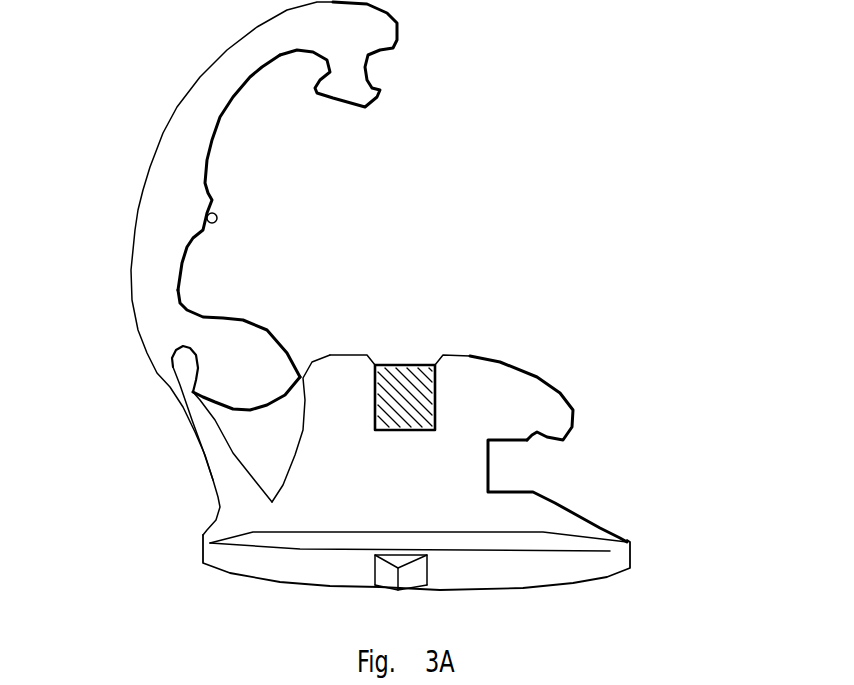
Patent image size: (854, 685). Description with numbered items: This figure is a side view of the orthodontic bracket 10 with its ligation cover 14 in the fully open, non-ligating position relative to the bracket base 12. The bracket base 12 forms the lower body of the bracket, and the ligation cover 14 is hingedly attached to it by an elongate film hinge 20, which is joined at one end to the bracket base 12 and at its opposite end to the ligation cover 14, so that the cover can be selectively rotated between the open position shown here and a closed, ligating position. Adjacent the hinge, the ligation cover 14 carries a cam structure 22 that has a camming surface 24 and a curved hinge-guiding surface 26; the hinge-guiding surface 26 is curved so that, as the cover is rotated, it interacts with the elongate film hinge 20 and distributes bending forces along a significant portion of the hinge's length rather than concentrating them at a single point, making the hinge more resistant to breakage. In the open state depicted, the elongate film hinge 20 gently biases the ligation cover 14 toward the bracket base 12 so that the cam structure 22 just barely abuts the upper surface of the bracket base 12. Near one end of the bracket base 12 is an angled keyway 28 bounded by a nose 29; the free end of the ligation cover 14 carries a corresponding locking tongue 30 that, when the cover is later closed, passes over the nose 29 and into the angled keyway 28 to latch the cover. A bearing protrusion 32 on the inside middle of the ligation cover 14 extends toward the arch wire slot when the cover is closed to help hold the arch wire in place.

The orthodontic bracket 10 is at (700, 121).
The bracket base 12 is at (477, 513).
The ligation cover 14 is at (200, 88).
The elongate film hinge 20 is at (180, 403).
The cam structure 22 is at (242, 337).
The camming surface 24 is at (283, 347).
The curved hinge-guiding surface 26 is at (220, 403).
The angled keyway 28 is at (548, 443).
The nose 29 is at (563, 402).
The locking tongue 30 is at (315, 93).
The bearing protrusion 32 is at (207, 218).